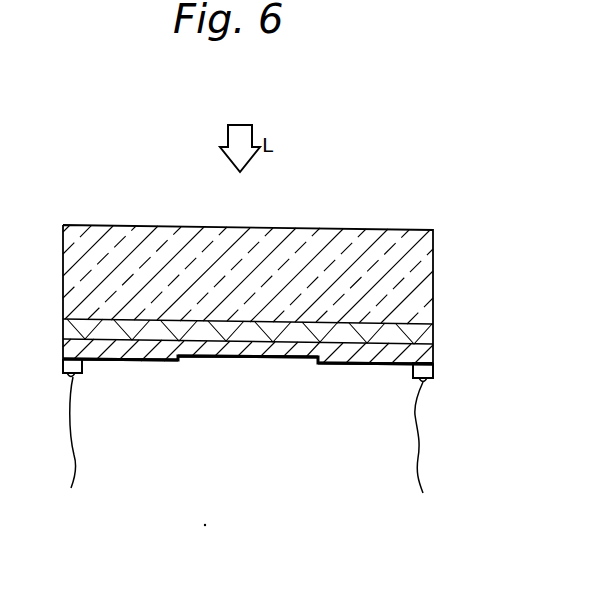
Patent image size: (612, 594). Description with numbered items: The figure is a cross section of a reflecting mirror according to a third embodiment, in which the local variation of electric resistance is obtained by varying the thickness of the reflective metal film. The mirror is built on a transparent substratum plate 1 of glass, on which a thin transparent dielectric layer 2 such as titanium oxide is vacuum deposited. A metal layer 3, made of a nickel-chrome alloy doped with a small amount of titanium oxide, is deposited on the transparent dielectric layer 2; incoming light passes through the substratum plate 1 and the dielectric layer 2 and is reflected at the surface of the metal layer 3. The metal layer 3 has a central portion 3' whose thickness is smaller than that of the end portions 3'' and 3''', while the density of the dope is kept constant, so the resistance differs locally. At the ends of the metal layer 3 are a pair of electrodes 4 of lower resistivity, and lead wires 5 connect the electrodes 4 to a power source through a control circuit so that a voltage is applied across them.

The transparent substratum plate 1 is at (433, 270).
The transparent dielectric layer 2 is at (433, 327).
The metal layer 3 is at (266, 354).
The portion of the metal layer of small thickness 3' is at (248, 378).
The portion of the metal layer 3'' is at (120, 385).
The portion of the metal layer 3''' is at (375, 384).
The electrodes 4 is at (433, 370).
The lead wires 5 is at (418, 461).